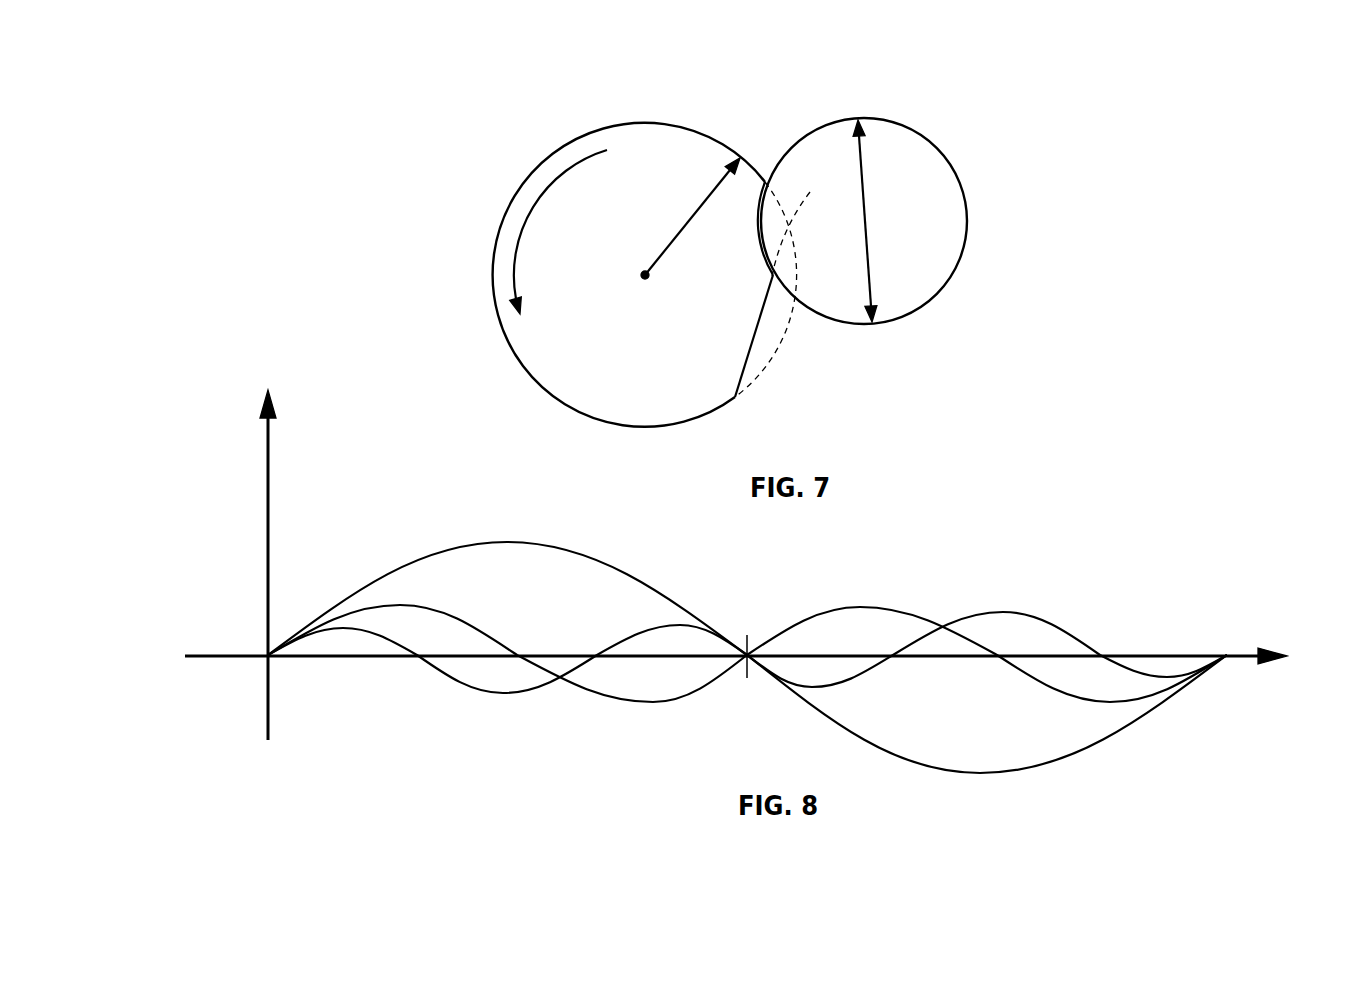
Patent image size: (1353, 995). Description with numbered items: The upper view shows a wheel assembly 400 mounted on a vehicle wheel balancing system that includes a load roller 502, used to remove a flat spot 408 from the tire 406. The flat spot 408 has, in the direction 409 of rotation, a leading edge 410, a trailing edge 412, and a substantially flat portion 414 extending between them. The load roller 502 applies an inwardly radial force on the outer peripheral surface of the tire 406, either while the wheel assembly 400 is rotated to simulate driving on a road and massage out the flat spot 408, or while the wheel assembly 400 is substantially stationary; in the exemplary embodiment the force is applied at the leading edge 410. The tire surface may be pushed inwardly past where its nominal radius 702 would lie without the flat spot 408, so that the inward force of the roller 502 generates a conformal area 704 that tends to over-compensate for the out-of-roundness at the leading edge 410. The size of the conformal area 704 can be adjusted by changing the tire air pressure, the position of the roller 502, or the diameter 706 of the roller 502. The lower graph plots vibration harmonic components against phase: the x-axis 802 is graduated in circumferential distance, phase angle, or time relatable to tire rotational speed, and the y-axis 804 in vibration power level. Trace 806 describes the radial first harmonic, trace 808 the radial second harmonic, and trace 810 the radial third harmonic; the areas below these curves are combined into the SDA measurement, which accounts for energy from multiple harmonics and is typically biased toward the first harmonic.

In FIG. 7, the wheel assembly 400 is at (531, 42).
In FIG. 7, the tire 406 is at (630, 125).
In FIG. 7, the direction of rotation 409 is at (523, 230).
In FIG. 7, the wheel radius 702 is at (682, 228).
In FIG. 7, the conformal area 704 is at (758, 255).
In FIG. 7, the leading edge 410 is at (801, 220).
In FIG. 7, the flat portion 414 is at (752, 357).
In FIG. 7, the trailing edge 412 is at (735, 397).
In FIG. 7, the flat spot 408 is at (905, 248).
In FIG. 7, the load roller 502 is at (968, 208).
In FIG. 7, the diameter 706 is at (868, 233).
In FIG. 8, the x-axis 802 is at (1237, 658).
In FIG. 8, the y-axis 804 is at (268, 478).
In FIG. 8, the trace 806 is at (563, 540).
In FIG. 8, the trace 808 is at (453, 617).
In FIG. 8, the trace 810 is at (452, 682).